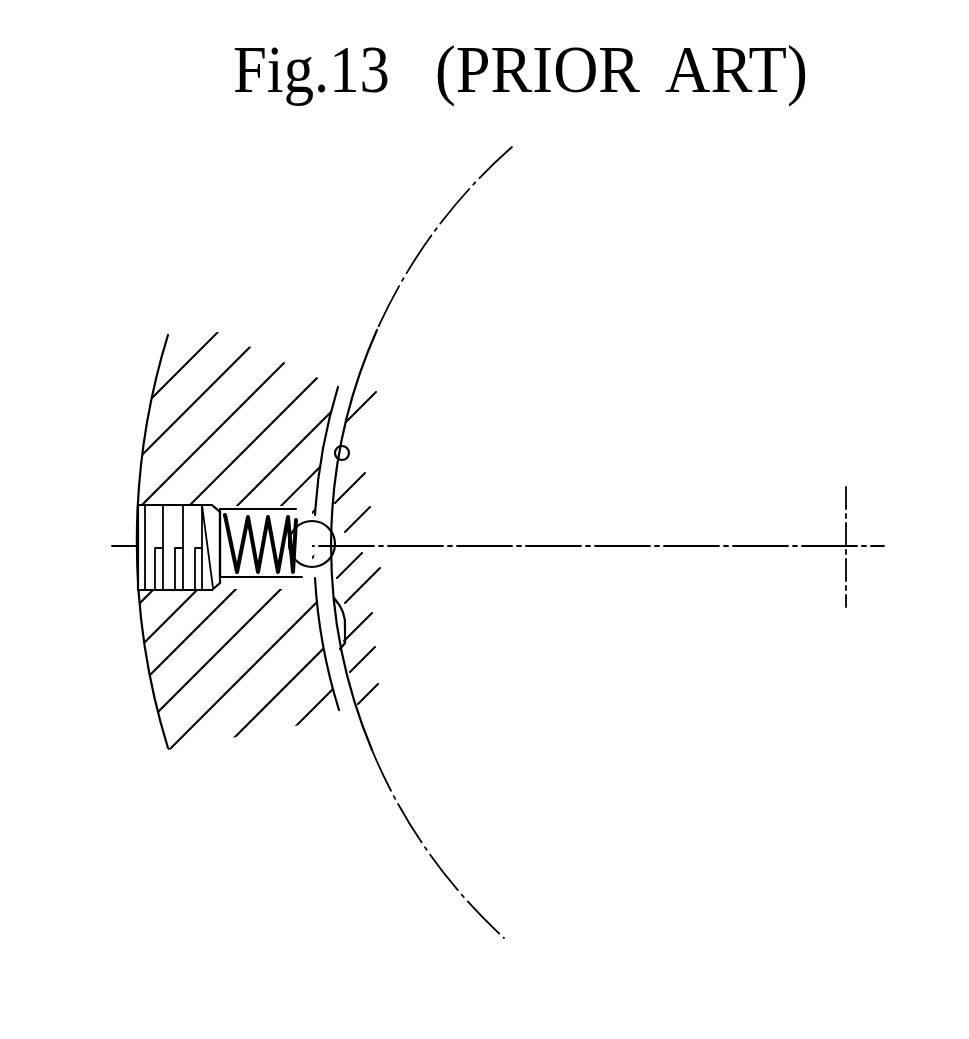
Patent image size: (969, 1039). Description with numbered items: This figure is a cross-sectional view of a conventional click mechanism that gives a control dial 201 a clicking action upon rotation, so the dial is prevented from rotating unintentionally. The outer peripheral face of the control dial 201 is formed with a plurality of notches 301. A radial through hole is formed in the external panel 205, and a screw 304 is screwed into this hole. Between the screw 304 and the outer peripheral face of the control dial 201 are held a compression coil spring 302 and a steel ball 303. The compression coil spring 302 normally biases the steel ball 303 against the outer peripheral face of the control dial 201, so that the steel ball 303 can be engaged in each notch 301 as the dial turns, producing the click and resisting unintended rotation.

The control dial 201 is at (388, 789).
The external panel 205 is at (175, 668).
The notch 301 is at (402, 430).
The compression coil spring 302 is at (268, 556).
The steel ball 303 is at (318, 554).
The screw 304 is at (157, 527).